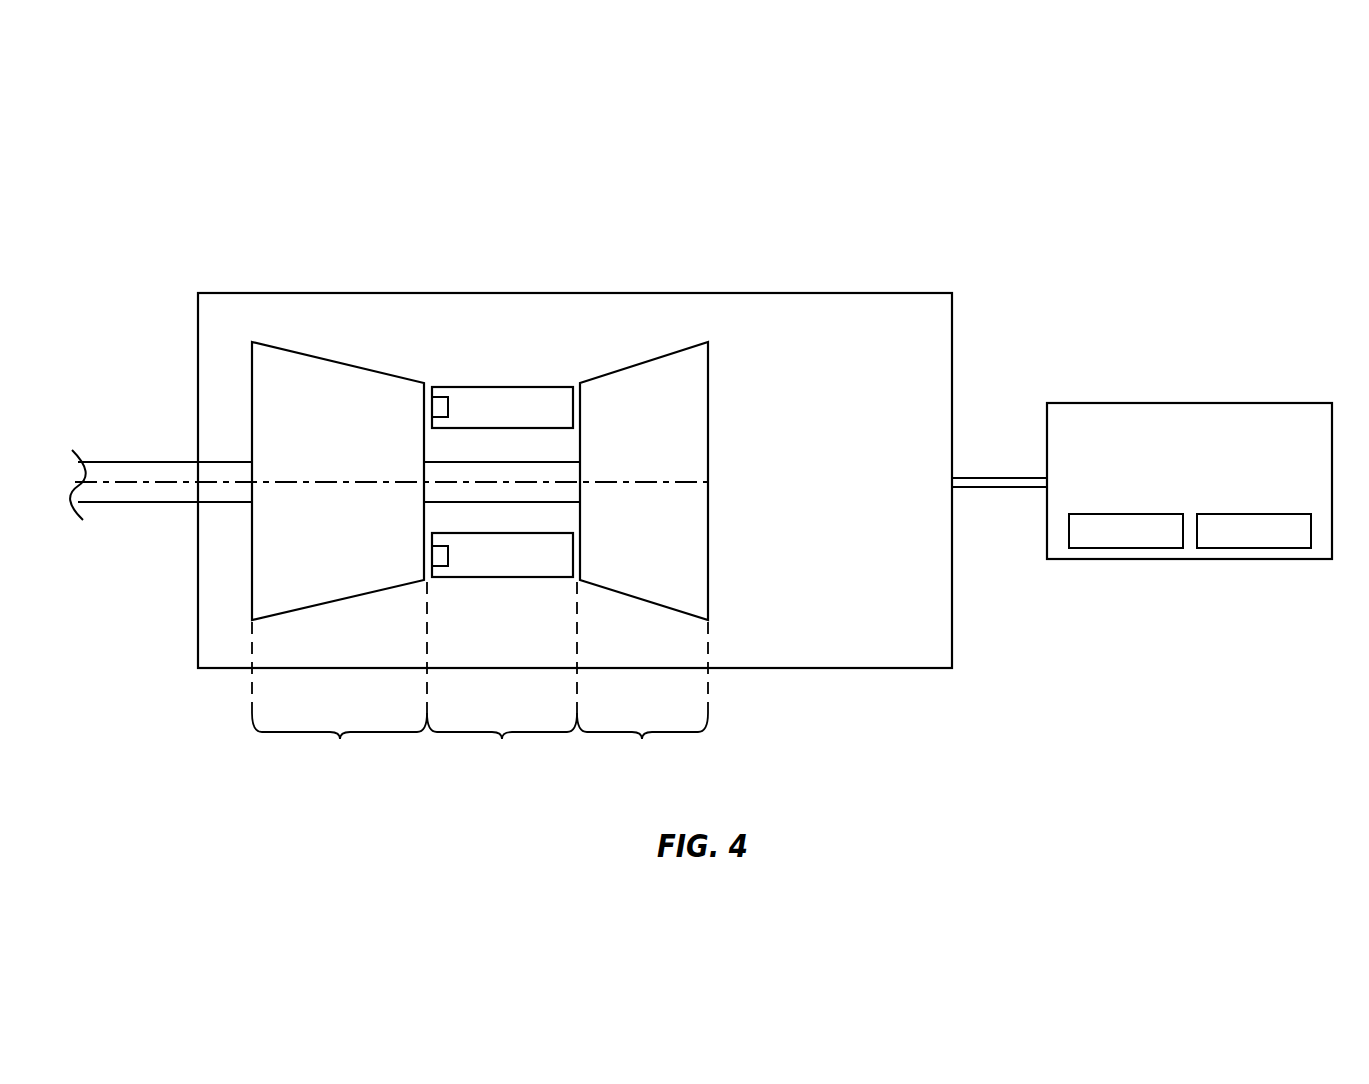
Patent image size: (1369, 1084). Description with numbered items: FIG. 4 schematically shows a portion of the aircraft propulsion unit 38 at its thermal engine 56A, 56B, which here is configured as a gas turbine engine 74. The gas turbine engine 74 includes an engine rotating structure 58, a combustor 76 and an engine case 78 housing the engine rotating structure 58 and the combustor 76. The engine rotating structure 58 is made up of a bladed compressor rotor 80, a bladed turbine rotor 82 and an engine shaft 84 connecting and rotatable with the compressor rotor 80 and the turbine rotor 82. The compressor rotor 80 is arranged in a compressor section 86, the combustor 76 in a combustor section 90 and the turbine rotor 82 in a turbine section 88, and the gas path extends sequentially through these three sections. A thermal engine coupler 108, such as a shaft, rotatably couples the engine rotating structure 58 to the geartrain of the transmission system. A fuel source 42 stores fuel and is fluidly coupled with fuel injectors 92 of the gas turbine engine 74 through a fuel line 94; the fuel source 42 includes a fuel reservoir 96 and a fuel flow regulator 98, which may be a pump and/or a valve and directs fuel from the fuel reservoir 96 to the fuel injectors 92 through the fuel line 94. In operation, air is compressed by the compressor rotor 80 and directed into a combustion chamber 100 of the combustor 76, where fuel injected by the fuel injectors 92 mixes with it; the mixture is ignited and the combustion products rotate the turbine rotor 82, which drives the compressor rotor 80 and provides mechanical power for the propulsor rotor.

The propulsion system 38 is at (248, 216).
The fuel source 42 is at (1189, 466).
The thermal engine 56A is at (575, 430).
The thermal engine 56B is at (575, 430).
The gas turbine engine 74 is at (650, 284).
The engine case 78 is at (566, 292).
The engine rotating structure 58 is at (284, 476).
The bladed compressor rotor 80 is at (245, 566).
The bladed turbine rotor 82 is at (708, 565).
The engine shaft 84 is at (455, 502).
The thermal engine coupler 108 is at (117, 460).
The combustor 76 is at (502, 479).
The combustion chamber 100 is at (530, 423).
The fuel injectors 92 is at (440, 397).
The compressor section 86 is at (339, 679).
The combustor section 90 is at (502, 679).
The turbine section 88 is at (642, 699).
The fuel line 94 is at (1000, 475).
The fuel flow regulator 98 is at (1125, 548).
The fuel reservoir 96 is at (1266, 548).